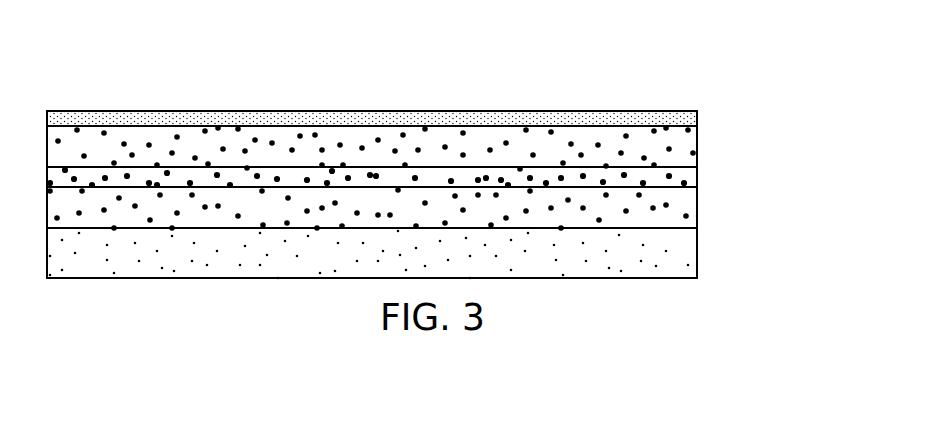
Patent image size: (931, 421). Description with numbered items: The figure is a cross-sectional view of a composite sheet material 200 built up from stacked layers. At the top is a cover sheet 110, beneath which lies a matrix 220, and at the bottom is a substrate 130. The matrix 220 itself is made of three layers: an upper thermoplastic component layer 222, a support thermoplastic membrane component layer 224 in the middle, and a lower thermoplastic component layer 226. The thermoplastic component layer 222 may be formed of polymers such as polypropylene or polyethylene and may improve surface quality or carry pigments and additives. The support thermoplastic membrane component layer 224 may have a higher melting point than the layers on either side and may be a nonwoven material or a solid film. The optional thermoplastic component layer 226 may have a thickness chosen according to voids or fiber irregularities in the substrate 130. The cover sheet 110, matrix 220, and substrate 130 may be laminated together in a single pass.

The composite sheet material 200 is at (118, 96).
The cover sheet 110 is at (705, 112).
The matrix 220 is at (445, 173).
The thermoplastic component layer 222 is at (703, 144).
The support thermoplastic membrane component layer 224 is at (703, 175).
The thermoplastic component layer 226 is at (416, 205).
The substrate 130 is at (705, 249).